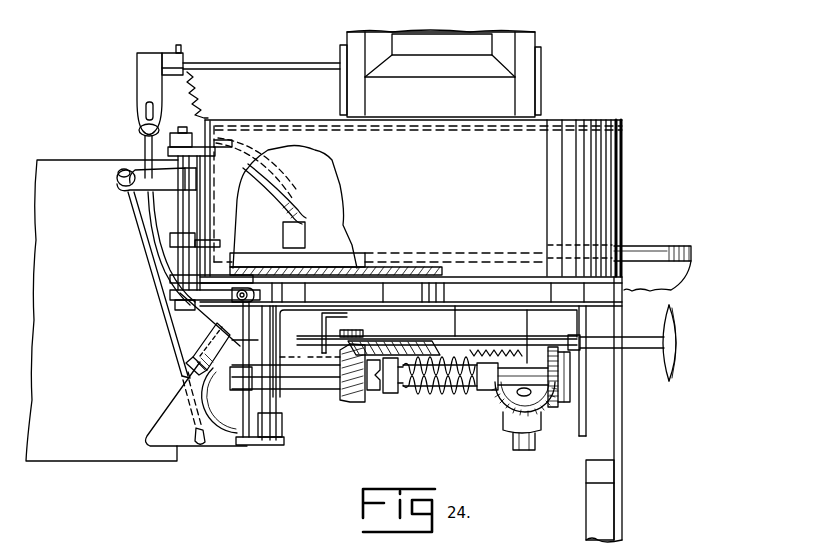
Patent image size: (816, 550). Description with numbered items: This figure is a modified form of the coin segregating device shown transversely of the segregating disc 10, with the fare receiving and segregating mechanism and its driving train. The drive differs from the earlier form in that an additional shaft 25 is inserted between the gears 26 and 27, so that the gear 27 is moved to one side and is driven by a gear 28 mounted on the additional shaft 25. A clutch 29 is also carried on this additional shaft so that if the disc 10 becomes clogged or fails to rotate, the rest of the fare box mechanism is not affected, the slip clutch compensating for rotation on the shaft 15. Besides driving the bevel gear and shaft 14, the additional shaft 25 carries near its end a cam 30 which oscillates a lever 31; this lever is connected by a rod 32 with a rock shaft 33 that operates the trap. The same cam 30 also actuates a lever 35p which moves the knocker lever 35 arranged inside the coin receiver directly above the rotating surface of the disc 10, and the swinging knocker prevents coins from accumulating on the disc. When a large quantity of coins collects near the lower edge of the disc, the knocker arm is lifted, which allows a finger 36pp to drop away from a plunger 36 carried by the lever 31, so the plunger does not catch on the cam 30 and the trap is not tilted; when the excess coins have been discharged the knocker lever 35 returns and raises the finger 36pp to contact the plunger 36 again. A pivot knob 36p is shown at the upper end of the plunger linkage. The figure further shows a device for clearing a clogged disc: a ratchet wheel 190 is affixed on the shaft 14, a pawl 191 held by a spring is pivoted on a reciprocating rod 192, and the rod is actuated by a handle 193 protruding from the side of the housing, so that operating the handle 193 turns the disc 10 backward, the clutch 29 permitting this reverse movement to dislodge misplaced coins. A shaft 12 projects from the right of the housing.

The disc 10 is at (329, 267).
The shaft 12 is at (655, 249).
The shaft 14 is at (432, 322).
The shaft 15 is at (531, 438).
The additional shaft 25 is at (500, 394).
The gear 26 is at (290, 353).
The gear 27 is at (466, 364).
The gear 28 is at (359, 398).
The clutch 29 is at (388, 391).
The cam 30 is at (239, 397).
The lever 31 is at (236, 321).
The rod 32 is at (218, 316).
The rock shaft 33 is at (256, 58).
The knocker lever 35 is at (280, 196).
The lever 35p is at (268, 312).
The plunger 36 is at (185, 366).
The pivot knob 36p is at (125, 188).
The finger 36pp is at (185, 444).
The ratchet wheel 190 is at (356, 332).
The pawl 191 is at (463, 340).
The reciprocating rod 192 is at (511, 338).
The handle 193 is at (640, 343).